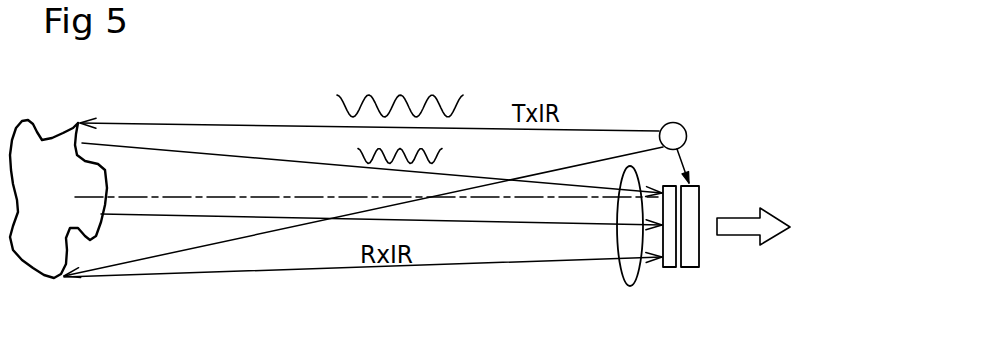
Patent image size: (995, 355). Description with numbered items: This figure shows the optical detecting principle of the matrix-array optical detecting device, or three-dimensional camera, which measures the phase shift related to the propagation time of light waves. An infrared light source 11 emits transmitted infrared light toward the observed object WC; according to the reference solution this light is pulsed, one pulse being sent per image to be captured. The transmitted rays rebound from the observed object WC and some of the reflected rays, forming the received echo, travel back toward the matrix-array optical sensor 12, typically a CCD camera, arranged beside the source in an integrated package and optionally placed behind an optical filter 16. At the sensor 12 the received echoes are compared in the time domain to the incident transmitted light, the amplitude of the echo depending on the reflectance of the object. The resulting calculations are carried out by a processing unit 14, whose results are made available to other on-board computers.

The infrared light source 11 is at (684, 118).
The matrix-array optical sensor 12 is at (671, 268).
The processing unit 14 is at (701, 268).
The optical filter 16 is at (618, 273).
The observed object WC is at (40, 140).